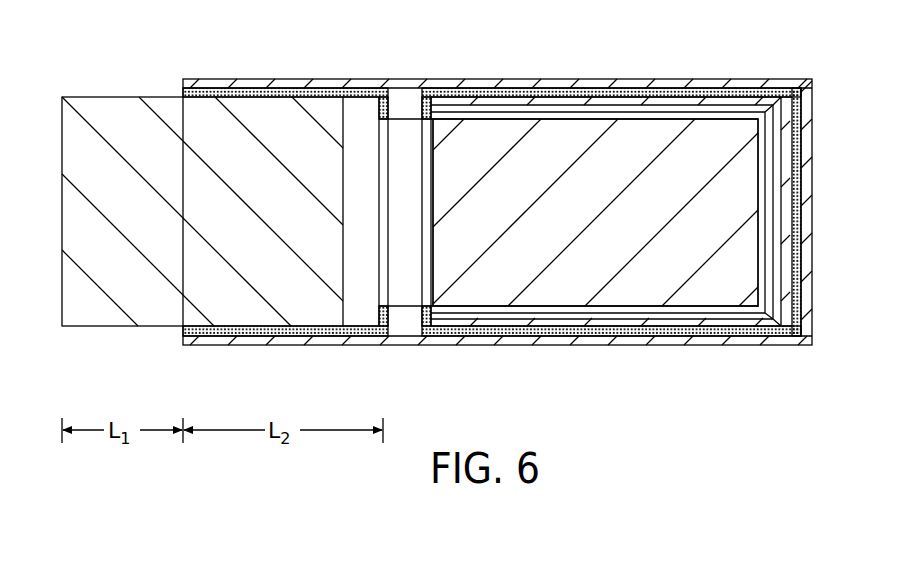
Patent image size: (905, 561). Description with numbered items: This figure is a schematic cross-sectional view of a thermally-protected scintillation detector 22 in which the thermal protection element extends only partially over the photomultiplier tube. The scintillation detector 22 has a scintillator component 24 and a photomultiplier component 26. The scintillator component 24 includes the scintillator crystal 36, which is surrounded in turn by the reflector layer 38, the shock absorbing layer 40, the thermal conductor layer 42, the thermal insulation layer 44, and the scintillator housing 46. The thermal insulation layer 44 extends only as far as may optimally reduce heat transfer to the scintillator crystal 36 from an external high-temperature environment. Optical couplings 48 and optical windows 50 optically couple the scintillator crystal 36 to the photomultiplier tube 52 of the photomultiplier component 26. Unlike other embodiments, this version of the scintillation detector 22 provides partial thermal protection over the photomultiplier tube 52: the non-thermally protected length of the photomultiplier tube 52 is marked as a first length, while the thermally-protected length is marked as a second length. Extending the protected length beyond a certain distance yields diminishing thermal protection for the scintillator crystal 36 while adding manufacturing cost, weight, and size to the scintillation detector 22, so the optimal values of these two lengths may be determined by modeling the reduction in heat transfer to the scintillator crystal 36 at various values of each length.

The scintillation detector 22 is at (156, 359).
The scintillator component 24 is at (785, 349).
The photomultiplier component 26 is at (82, 92).
The scintillator crystal 36 is at (540, 295).
The reflector layer 38 is at (700, 315).
The shock absorbing layer 40 is at (500, 107).
The thermal conductor layer 42 is at (572, 102).
The thermal insulation layer 44 is at (690, 87).
The scintillator housing 46 is at (772, 90).
The optical couplings 48 is at (425, 310).
The optical windows 50 is at (405, 130).
The photomultiplier tube 52 is at (118, 115).